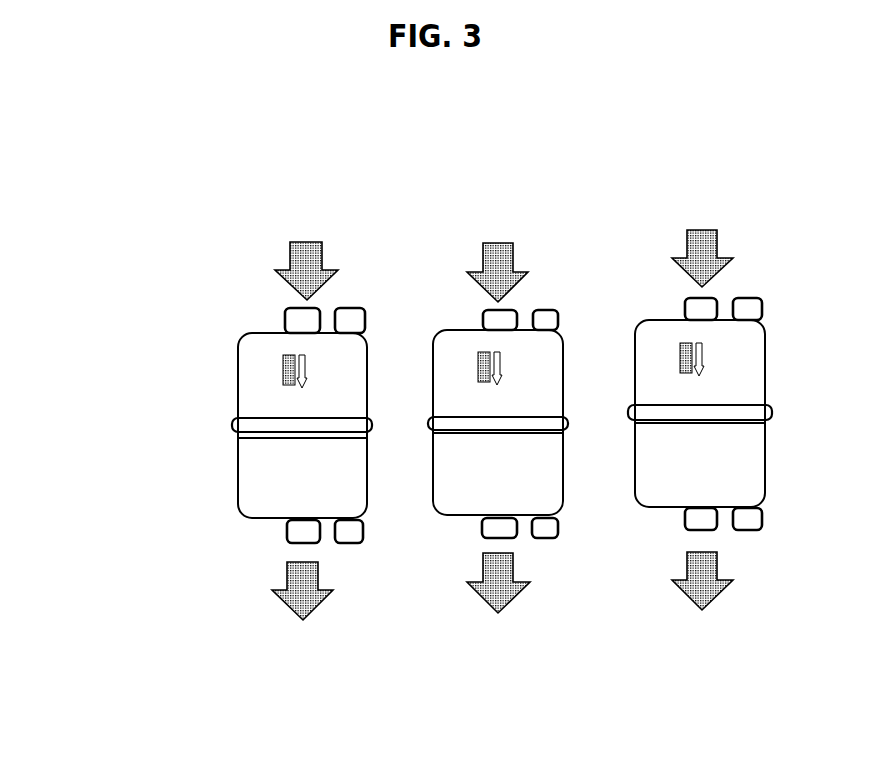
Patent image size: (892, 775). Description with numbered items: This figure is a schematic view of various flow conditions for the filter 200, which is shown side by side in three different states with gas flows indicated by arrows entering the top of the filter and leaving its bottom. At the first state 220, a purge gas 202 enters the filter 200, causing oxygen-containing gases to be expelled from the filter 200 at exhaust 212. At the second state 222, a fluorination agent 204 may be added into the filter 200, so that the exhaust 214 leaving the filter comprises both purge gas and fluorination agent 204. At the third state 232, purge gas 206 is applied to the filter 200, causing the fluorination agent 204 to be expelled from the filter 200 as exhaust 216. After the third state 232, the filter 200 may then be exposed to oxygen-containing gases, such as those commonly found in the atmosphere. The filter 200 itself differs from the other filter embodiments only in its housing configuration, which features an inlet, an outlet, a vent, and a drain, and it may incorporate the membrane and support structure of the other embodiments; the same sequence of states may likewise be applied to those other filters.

The filter 200 is at (236, 397).
The purge gas 202 is at (306, 239).
The fluorination agent 204 is at (486, 243).
The purge gas 206 is at (688, 234).
The exhaust 212 is at (294, 625).
The exhaust 214 is at (498, 611).
The exhaust 216 is at (707, 607).
The first state 220 is at (295, 333).
The second state 222 is at (498, 330).
The third state 232 is at (700, 329).